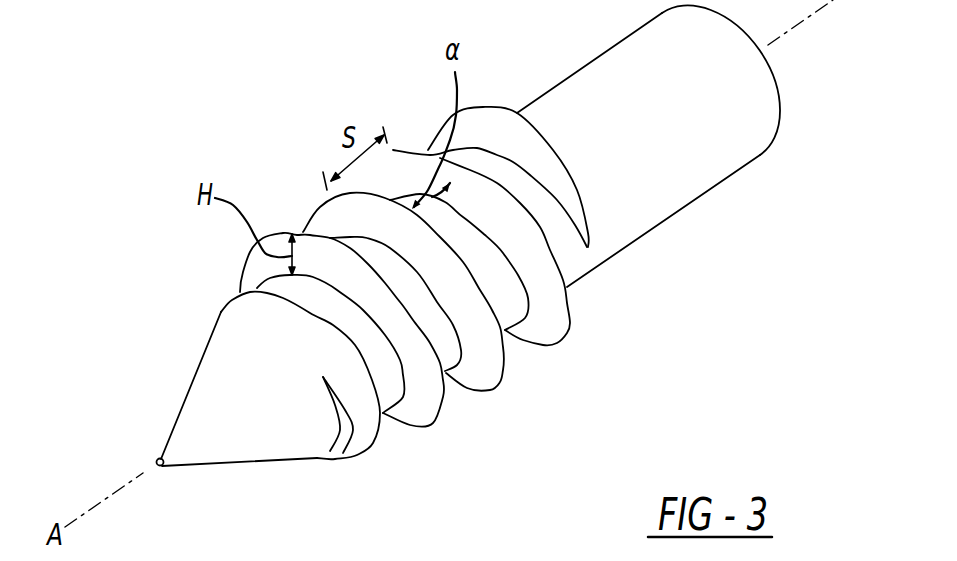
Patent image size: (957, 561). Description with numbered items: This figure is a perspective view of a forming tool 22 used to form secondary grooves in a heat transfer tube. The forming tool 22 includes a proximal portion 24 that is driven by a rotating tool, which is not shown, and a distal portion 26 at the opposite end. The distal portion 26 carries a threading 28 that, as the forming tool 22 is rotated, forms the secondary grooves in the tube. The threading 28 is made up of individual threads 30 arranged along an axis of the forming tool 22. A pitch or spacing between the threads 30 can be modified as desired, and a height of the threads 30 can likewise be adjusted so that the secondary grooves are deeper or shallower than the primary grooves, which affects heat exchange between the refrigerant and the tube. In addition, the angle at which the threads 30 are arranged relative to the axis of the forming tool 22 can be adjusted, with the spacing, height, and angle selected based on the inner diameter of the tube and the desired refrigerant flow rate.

The forming tool 22 is at (717, 255).
The proximal portion 24 is at (725, 147).
The distal portion 26 is at (243, 432).
The threading 28 is at (418, 431).
The threads 30 is at (543, 320).